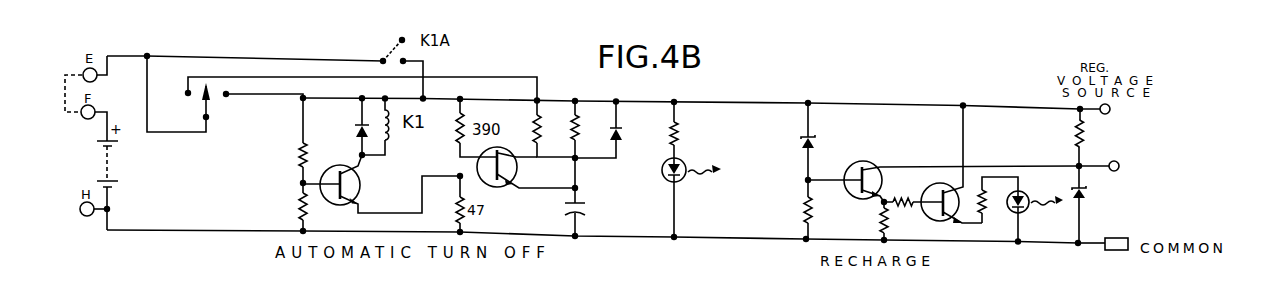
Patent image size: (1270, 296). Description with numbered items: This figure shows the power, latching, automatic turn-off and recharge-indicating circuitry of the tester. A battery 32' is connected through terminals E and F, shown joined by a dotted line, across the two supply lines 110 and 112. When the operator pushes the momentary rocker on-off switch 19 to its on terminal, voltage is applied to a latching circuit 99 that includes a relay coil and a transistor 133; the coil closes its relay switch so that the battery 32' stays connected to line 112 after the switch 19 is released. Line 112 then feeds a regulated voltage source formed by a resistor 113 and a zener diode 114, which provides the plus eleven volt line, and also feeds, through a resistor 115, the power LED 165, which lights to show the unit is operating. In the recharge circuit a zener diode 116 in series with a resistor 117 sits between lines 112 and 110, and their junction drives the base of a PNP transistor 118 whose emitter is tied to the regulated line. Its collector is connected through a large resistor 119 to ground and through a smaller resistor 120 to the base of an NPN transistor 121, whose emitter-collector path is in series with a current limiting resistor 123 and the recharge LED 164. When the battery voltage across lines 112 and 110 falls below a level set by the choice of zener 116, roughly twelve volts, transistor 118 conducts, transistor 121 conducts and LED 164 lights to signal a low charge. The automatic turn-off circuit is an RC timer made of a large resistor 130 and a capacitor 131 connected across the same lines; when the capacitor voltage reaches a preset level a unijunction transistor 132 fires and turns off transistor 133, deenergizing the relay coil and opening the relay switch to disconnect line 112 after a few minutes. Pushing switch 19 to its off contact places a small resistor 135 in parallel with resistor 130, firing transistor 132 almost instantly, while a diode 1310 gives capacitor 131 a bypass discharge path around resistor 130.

The line 110 is at (190, 229).
The line 112 is at (560, 101).
The resistor 113 is at (1073, 128).
The zener diode 114 is at (1093, 190).
The resistor 115 is at (677, 130).
The zener diode 116 is at (803, 137).
The resistor 117 is at (810, 203).
The PNP transistor 118 is at (845, 170).
The large resistor 119 is at (878, 226).
The smaller resistor 120 is at (925, 188).
The NPN transistor 121 is at (927, 217).
The current limiting resistor 123 is at (979, 192).
The resistor 130 is at (580, 136).
The capacitor 131 is at (585, 202).
The diode 1310 is at (621, 137).
The unijunction transistor 132 is at (517, 171).
The transistor 133 is at (361, 183).
The small resistor 135 is at (535, 122).
The recharge light 164 is at (1026, 192).
The power LED 165 is at (686, 182).
The on-off switch 19 is at (342, 96).
The battery 32' is at (135, 185).
The latching circuit 99 is at (327, 129).